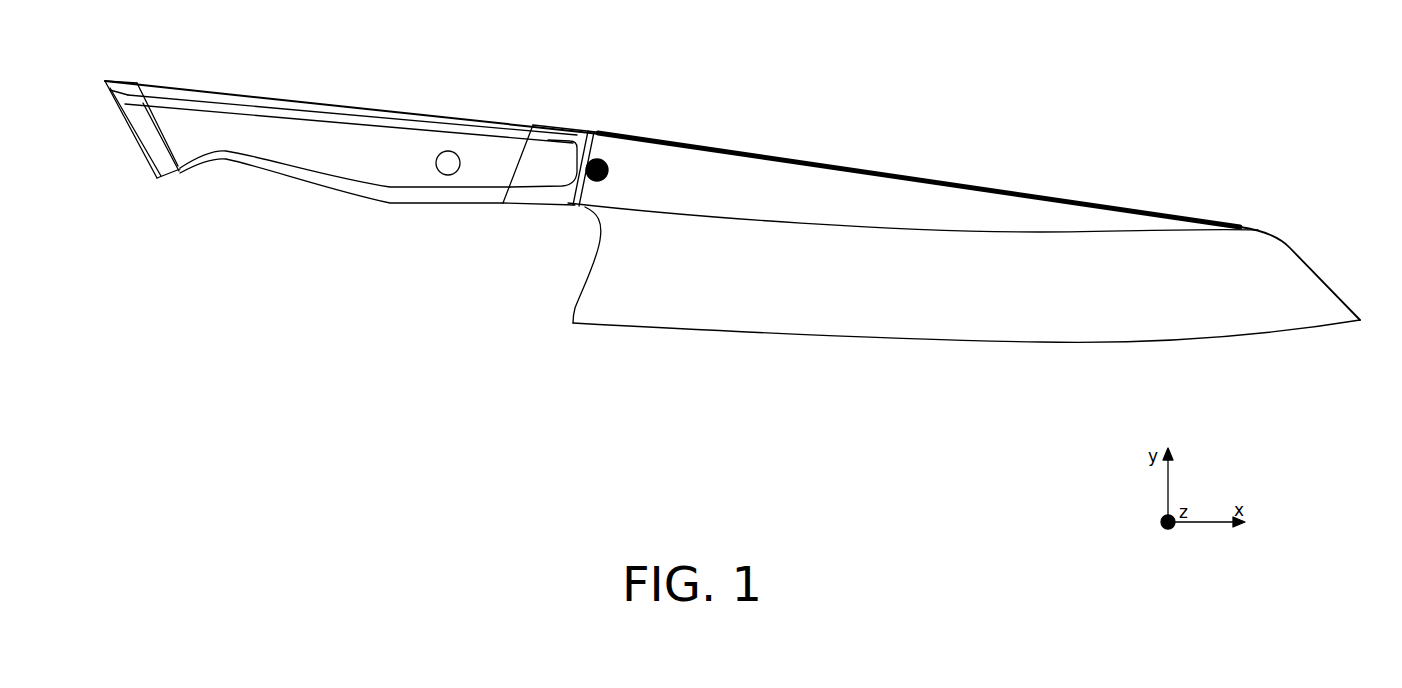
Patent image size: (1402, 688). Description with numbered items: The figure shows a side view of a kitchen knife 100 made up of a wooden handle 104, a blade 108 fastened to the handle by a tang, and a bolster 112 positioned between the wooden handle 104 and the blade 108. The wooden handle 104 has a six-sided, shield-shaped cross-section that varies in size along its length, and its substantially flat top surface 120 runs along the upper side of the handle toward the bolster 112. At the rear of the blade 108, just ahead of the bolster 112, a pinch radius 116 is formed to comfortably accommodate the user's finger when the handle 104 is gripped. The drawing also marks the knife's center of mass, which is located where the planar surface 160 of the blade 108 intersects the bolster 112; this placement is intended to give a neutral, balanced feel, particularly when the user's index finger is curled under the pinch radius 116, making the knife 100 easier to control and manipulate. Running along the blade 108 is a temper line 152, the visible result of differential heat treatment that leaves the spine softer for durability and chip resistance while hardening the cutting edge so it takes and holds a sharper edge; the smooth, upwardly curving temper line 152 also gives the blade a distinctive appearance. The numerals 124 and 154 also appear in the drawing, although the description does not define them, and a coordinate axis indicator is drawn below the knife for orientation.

The kitchen knife 100 is at (732, 191).
The wooden handle 104 is at (352, 152).
The blade 108 is at (912, 215).
The bolster 112 is at (565, 136).
The pinch radius 116 is at (587, 210).
The substantially flat top surface 120 is at (295, 95).
The tang 124 is at (600, 130).
The temper line 152 is at (993, 233).
The balance point 154 is at (604, 158).
The planar surface 160 is at (716, 178).